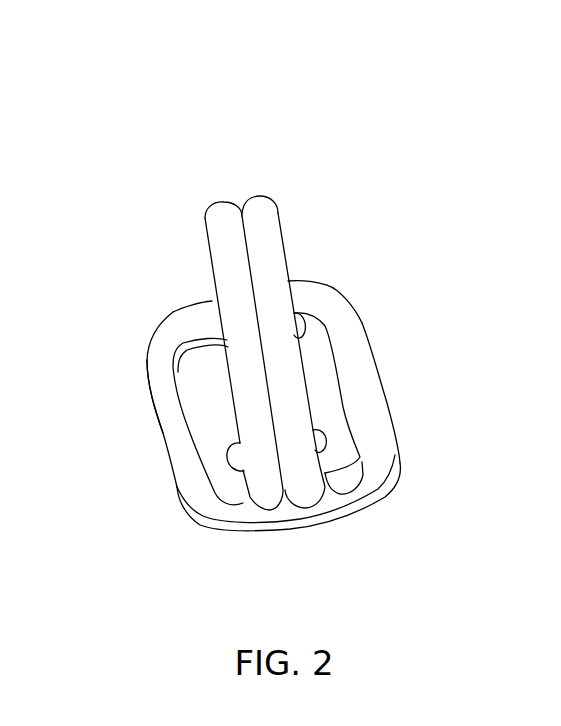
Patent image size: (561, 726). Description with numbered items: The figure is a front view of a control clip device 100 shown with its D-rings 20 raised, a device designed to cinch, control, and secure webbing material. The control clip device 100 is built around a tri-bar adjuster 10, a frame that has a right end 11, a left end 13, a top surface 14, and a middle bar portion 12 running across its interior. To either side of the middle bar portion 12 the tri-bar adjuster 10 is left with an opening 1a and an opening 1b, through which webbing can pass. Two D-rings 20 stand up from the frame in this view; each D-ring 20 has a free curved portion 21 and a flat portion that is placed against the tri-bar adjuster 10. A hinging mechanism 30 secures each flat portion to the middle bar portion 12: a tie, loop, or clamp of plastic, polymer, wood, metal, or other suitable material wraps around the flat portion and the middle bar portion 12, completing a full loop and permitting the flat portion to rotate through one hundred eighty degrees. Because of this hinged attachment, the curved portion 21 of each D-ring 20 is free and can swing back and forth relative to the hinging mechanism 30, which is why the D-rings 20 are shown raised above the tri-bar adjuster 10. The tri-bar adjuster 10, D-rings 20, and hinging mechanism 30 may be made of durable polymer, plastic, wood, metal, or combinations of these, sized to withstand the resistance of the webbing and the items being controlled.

The control clip device 100 is at (173, 312).
The tri-bar adjuster 10 is at (335, 290).
The right end 11 is at (185, 487).
The middle bar portion 12 is at (288, 492).
The left end 13 is at (397, 467).
The top surface 14 is at (338, 322).
The opening 1a is at (228, 478).
The opening 1b is at (337, 430).
The D-rings 20 is at (222, 204).
The curved portion 21 is at (235, 292).
The hinging mechanism 30 is at (227, 337).